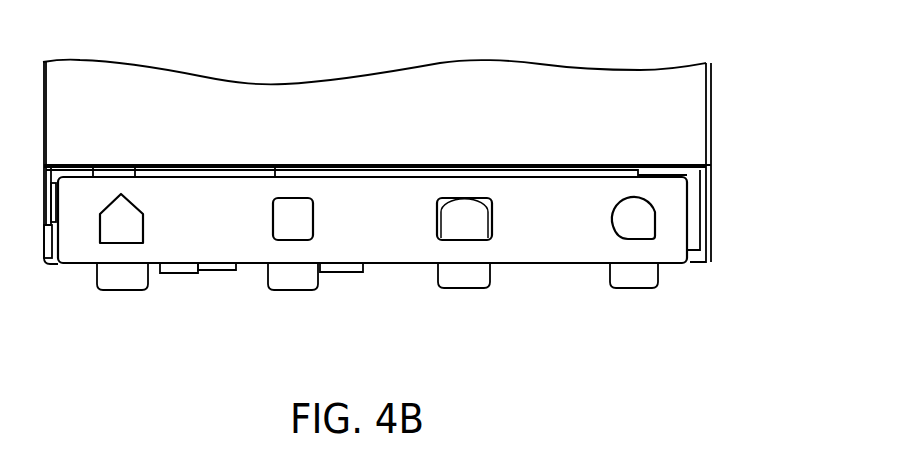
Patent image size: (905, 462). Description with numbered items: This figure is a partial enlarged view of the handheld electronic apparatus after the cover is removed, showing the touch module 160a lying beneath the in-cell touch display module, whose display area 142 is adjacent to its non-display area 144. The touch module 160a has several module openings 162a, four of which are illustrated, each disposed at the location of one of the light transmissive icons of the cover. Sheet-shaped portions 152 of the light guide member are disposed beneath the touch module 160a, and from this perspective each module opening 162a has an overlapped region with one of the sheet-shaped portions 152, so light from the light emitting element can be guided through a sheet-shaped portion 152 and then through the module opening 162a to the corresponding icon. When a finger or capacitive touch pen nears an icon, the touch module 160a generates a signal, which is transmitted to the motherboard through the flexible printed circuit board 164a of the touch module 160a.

The display area 142 is at (680, 102).
The non-display area 144 is at (690, 176).
The sheet-shaped portion 152 is at (643, 273).
The touch module 160a is at (555, 235).
The module opening 162a is at (622, 226).
The flexible printed circuit board 164a is at (117, 167).